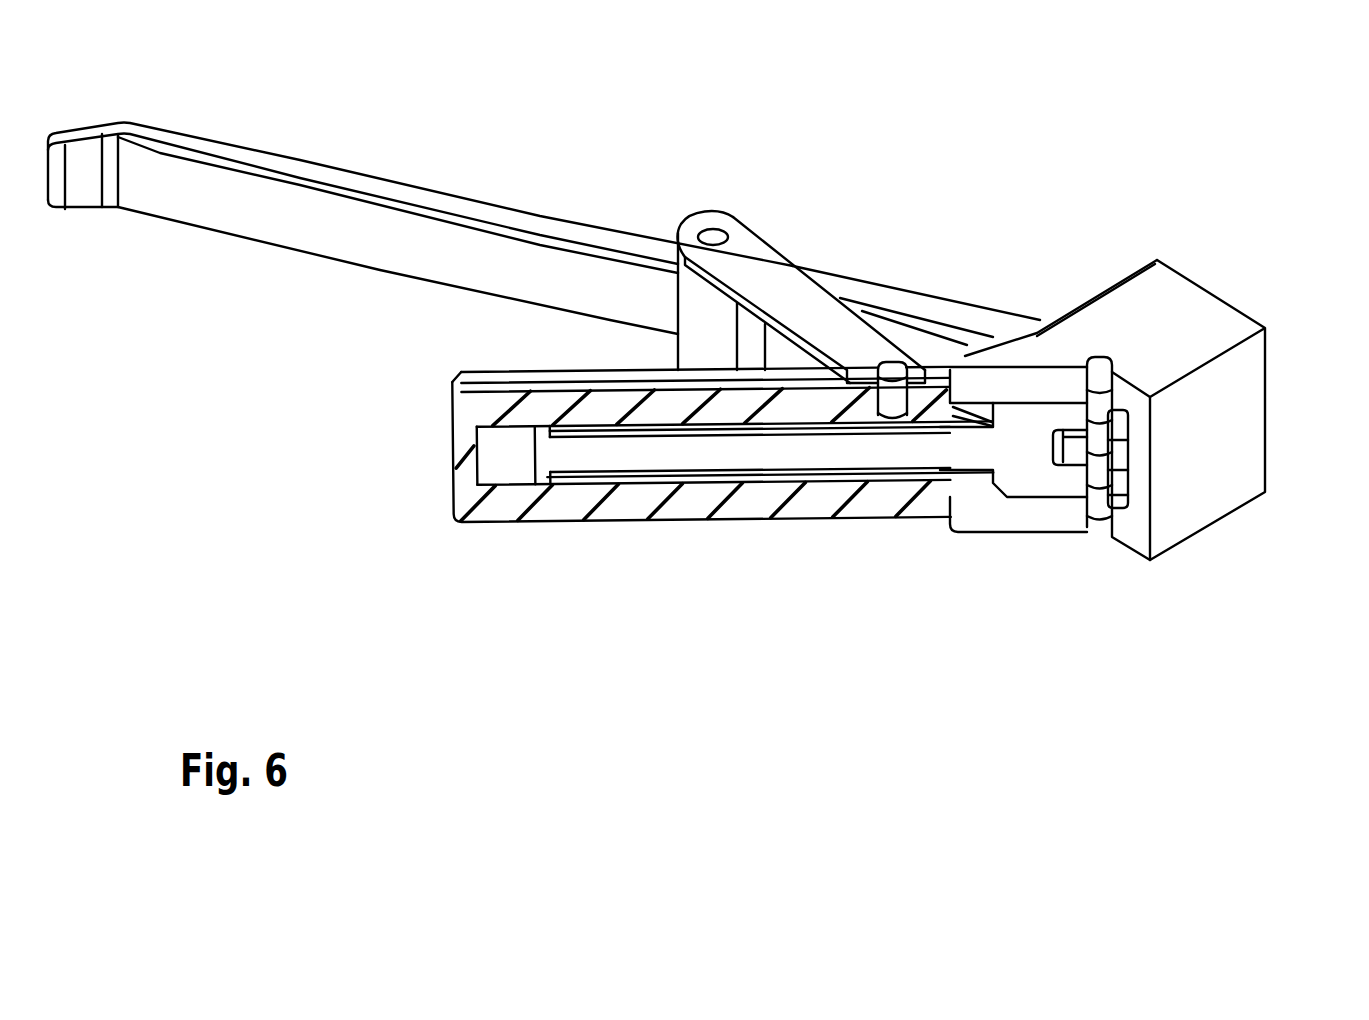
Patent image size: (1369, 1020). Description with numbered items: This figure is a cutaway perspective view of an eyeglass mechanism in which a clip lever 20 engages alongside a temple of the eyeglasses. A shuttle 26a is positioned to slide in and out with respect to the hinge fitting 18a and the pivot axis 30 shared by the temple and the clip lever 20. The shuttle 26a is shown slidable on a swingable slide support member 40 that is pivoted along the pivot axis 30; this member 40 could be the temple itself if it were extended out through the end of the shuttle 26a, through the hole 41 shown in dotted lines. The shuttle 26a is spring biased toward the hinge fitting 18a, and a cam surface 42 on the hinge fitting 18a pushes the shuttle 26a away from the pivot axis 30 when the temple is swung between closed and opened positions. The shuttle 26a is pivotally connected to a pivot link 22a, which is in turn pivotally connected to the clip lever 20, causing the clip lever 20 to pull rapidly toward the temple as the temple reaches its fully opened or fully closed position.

The clip lever 20 is at (410, 197).
The pivot link 22a is at (770, 268).
The shuttle 26a is at (574, 502).
The hole 41 is at (455, 500).
The swingable slide support member 40 is at (752, 456).
The cam surface 42 is at (945, 390).
The pivot axis 30 is at (1107, 360).
The hinge fitting 18a is at (1222, 424).